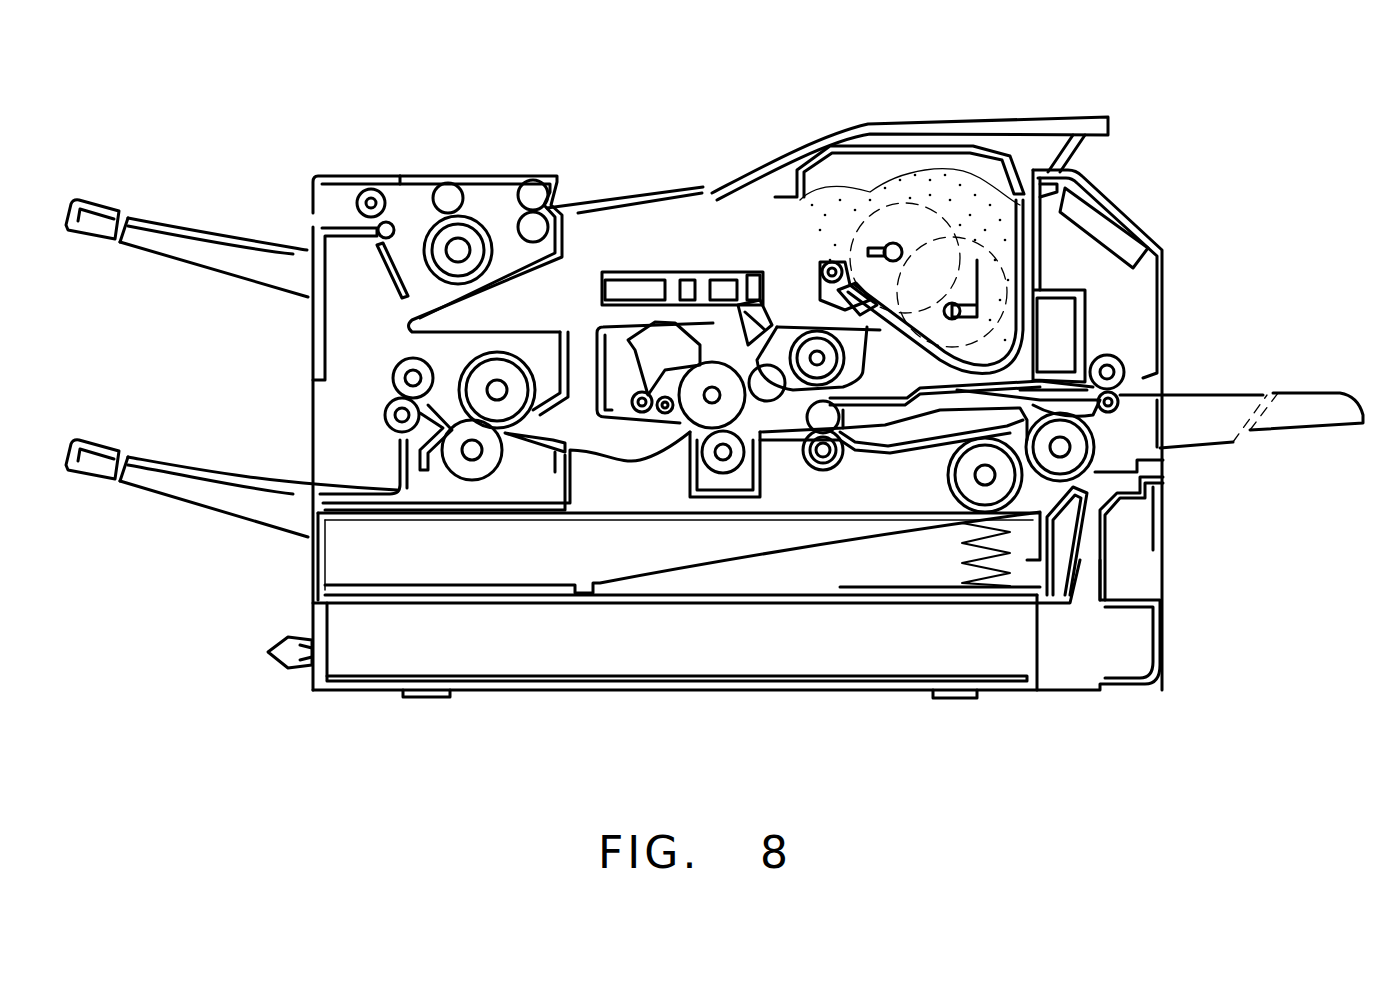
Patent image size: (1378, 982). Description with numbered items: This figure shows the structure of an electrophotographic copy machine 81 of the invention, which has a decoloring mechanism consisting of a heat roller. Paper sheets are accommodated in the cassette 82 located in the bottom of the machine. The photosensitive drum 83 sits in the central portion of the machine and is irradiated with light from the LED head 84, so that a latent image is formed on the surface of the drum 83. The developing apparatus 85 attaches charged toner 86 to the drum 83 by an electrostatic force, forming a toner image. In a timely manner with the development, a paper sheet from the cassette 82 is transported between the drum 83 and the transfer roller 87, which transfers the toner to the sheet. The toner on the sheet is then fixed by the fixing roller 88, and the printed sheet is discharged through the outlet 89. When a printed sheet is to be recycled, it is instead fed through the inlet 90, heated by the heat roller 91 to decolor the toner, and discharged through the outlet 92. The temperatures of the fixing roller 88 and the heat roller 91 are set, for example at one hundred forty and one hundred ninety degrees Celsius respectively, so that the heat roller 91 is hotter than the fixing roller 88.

The copy machine 81 is at (904, 114).
The cassette 82 is at (528, 575).
The photosensitive drum 83 is at (650, 355).
The LED head 84 is at (737, 268).
The developing apparatus 85 is at (805, 385).
The toner 86 is at (1003, 218).
The transfer roller 87 is at (720, 474).
The fixing roller 88 is at (490, 388).
The outlet 89 is at (327, 436).
The inlet 90 is at (560, 197).
The heat roller 91 is at (438, 250).
The outlet 92 is at (310, 212).